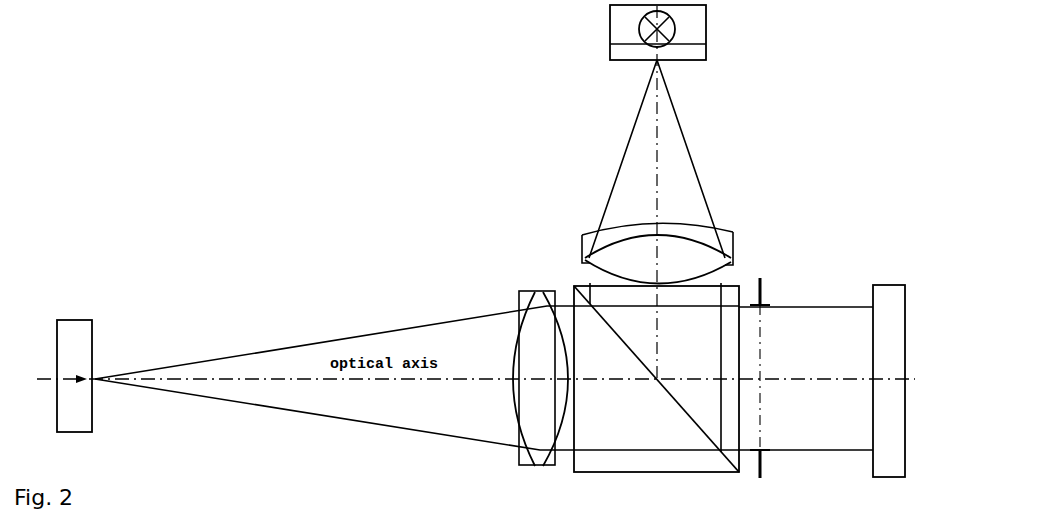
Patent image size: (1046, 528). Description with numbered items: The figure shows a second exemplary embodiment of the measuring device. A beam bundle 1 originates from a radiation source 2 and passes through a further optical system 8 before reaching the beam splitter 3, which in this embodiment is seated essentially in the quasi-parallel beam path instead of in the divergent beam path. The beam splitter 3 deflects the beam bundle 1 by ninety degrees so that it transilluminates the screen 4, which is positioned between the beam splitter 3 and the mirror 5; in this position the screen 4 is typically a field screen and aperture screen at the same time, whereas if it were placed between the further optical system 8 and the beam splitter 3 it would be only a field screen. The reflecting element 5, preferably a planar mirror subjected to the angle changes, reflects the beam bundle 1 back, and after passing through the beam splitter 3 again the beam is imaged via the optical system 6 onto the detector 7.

The beam bundle 1 is at (667, 162).
The radiation source 2 is at (643, 50).
The beam splitter 3 is at (727, 302).
The screen 4 is at (765, 287).
The reflecting element 5 is at (895, 312).
The optical system 6 is at (522, 292).
The detector 7 is at (72, 338).
The further optical system 8 is at (580, 232).